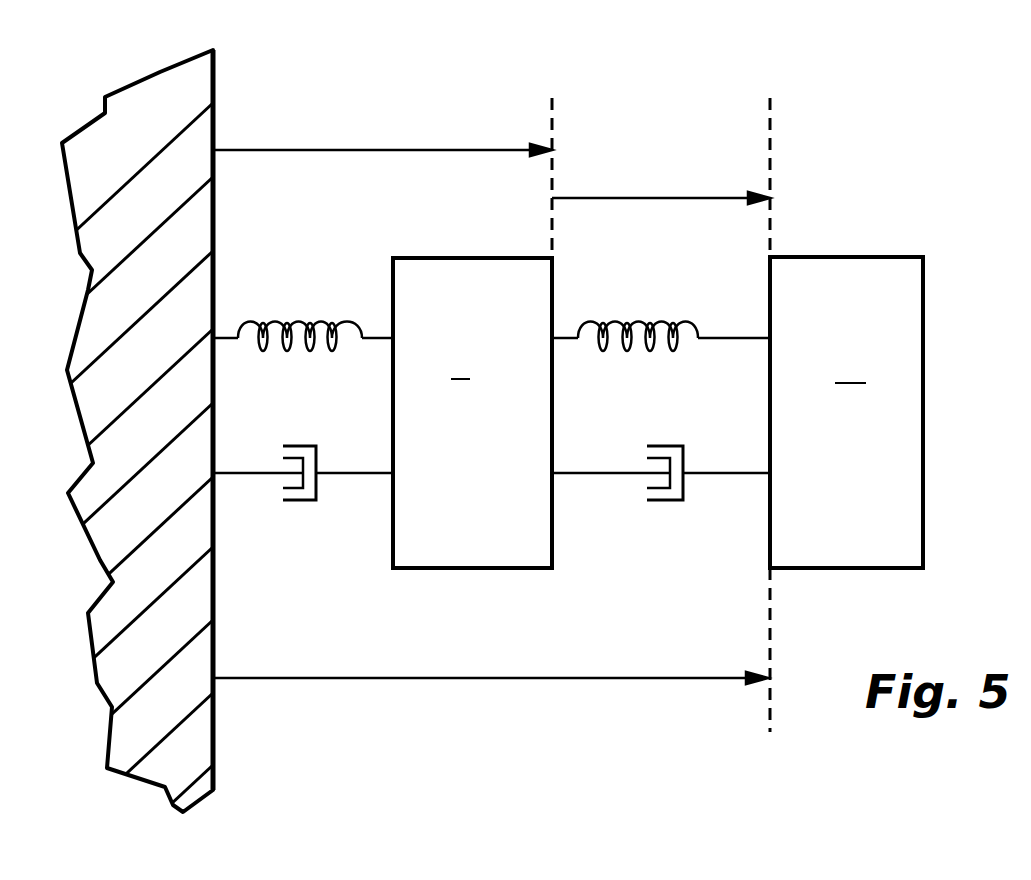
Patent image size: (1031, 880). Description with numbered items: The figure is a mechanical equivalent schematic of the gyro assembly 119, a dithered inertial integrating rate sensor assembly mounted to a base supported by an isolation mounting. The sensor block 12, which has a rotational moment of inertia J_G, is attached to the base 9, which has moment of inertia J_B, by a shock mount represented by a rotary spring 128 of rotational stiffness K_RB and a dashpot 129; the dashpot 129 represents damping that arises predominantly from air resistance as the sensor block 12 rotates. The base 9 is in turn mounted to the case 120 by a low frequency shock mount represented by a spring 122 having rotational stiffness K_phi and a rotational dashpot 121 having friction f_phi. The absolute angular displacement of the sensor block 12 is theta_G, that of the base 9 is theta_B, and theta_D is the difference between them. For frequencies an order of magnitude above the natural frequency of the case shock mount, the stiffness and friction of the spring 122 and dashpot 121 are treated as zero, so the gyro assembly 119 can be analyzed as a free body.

The gyro assembly 119 is at (845, 66).
The case 120 is at (216, 51).
The rotational dashpot 121 is at (292, 502).
The spring 122 is at (289, 350).
The base 9 is at (472, 413).
The rotary spring 128 is at (627, 348).
The dashpot 129 is at (684, 456).
The sensor block 12 is at (846, 412).